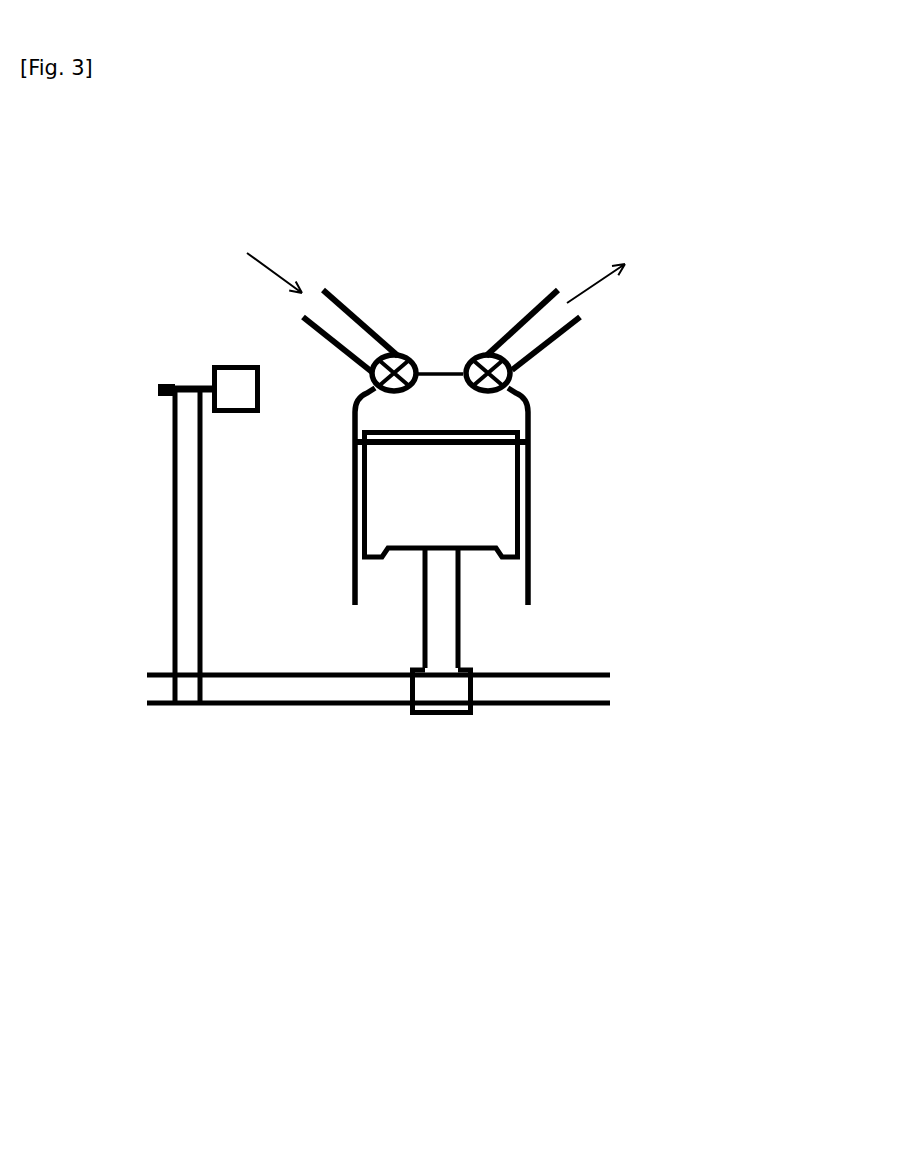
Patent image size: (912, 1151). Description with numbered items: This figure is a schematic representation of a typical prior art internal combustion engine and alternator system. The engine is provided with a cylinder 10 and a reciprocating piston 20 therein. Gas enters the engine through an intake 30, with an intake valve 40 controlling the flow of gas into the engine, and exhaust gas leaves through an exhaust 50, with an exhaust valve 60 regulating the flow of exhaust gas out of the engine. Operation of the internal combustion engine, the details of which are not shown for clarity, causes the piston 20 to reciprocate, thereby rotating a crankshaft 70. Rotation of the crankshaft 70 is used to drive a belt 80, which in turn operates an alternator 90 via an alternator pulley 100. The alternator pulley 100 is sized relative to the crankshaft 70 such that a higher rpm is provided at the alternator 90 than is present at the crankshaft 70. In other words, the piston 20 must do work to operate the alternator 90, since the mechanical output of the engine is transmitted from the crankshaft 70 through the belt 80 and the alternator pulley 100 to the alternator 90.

The cylinder 10 is at (528, 505).
The reciprocating piston 20 is at (452, 527).
The intake 30 is at (342, 303).
The intake valve 40 is at (410, 353).
The exhaust 50 is at (567, 332).
The exhaust valve 60 is at (512, 380).
The crankshaft 70 is at (510, 692).
The belt 80 is at (195, 640).
The alternator 90 is at (233, 380).
The alternator pulley 100 is at (157, 385).